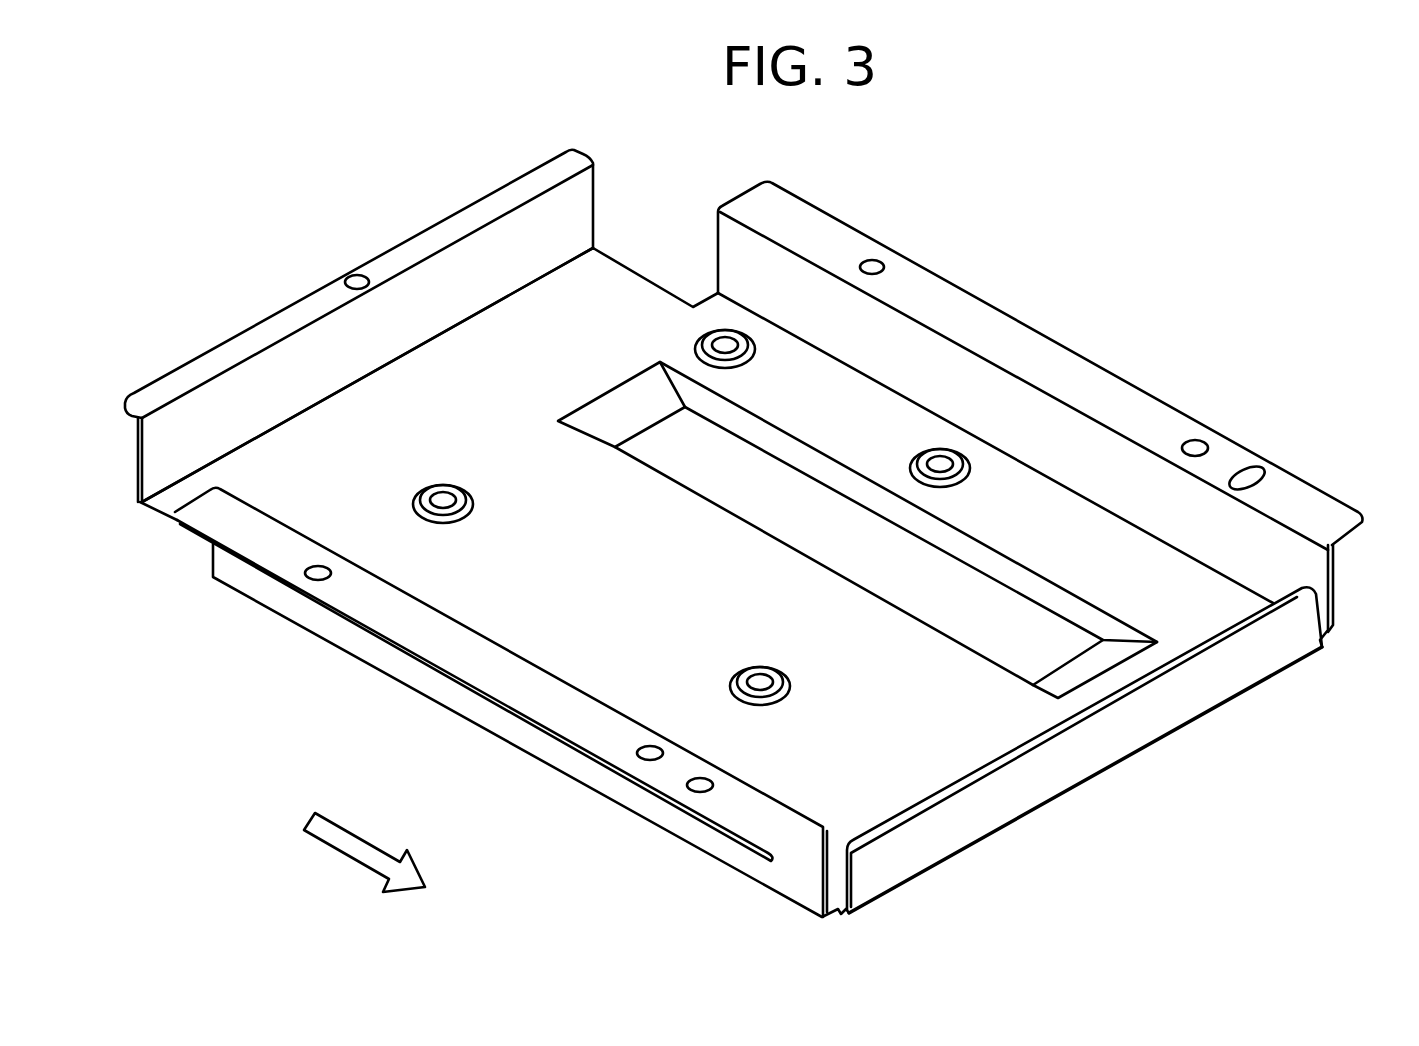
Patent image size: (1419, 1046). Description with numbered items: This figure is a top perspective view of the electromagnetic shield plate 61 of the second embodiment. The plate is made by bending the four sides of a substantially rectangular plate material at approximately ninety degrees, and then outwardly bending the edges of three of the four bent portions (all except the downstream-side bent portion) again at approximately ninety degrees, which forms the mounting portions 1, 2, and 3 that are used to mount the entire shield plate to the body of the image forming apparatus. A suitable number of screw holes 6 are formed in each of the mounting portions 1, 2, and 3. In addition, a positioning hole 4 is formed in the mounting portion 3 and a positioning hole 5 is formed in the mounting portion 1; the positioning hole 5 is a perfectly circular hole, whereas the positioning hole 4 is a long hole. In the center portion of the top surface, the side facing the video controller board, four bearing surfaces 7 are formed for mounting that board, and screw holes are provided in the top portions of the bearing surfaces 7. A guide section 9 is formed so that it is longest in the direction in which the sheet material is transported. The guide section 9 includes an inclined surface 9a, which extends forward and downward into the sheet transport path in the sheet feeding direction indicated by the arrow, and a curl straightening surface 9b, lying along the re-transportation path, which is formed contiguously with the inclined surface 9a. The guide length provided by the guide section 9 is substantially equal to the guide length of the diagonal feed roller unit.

The mounting portion 1 is at (1140, 405).
The mounting portion 2 is at (312, 302).
The mounting portion 3 is at (402, 632).
The positioning hole 4 is at (1262, 478).
The positioning hole 5 is at (695, 792).
The screw holes 6 is at (353, 273).
The electromagnetic shield plate 61 is at (852, 205).
The bearing surfaces 7 is at (738, 342).
The guide section 9 is at (1043, 661).
The inclined surface 9a is at (613, 418).
The curl straightening surface 9b is at (795, 538).